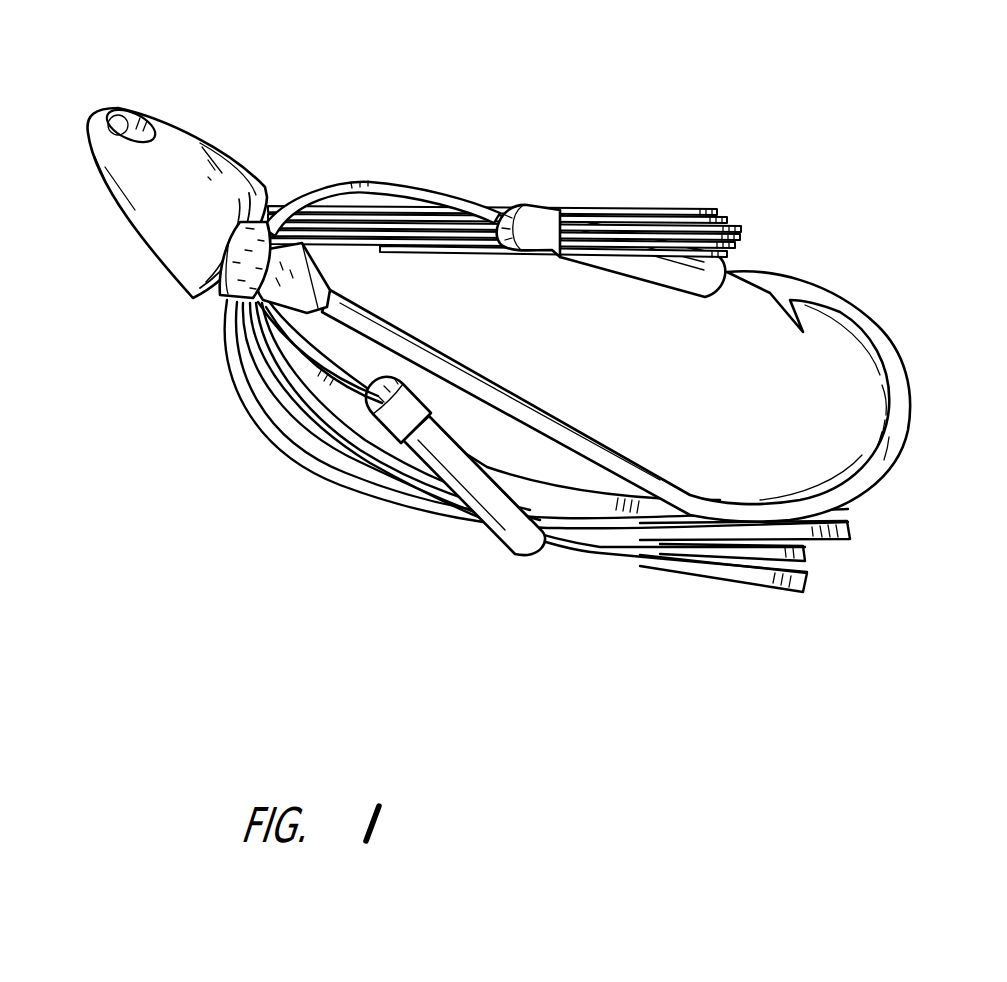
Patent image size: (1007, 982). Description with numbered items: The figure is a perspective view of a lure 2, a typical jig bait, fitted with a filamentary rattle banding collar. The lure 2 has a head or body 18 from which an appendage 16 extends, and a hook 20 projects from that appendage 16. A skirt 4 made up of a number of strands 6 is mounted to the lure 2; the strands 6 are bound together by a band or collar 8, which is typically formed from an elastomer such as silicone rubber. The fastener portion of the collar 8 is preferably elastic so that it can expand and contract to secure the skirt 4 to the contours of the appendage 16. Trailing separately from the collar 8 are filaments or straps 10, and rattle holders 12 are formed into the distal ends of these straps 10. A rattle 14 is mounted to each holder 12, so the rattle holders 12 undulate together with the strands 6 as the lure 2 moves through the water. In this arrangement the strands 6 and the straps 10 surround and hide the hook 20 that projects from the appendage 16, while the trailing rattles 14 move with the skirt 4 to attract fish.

The lure 2 is at (240, 73).
The skirt 4 is at (296, 464).
The strands 6 is at (760, 578).
The collar 8 is at (242, 283).
The straps 10 is at (382, 181).
The rattle holders 12 is at (548, 218).
The rattles 14 is at (651, 240).
The appendage 16 is at (330, 275).
The lure head or body 18 is at (170, 278).
The hook 20 is at (881, 410).